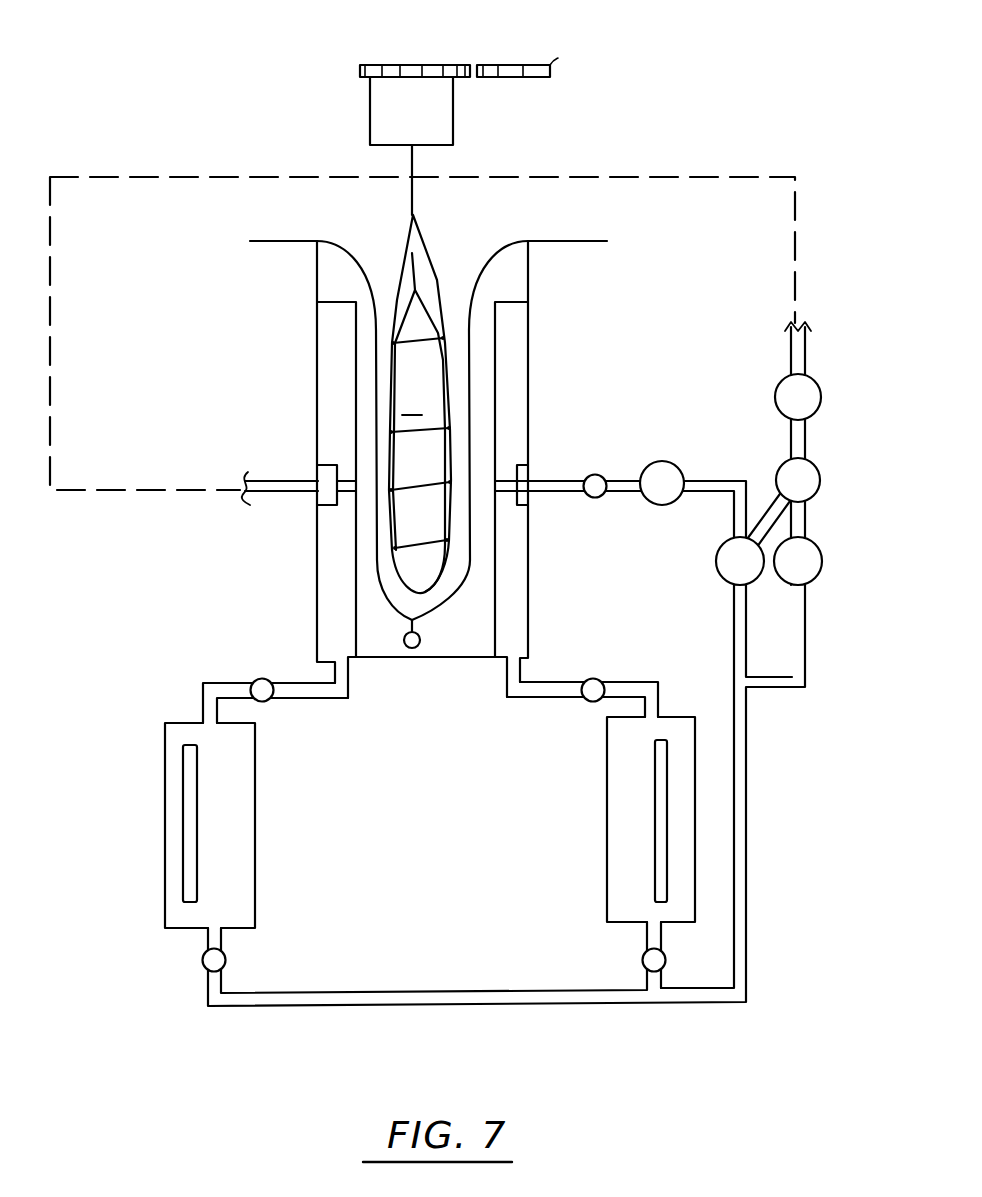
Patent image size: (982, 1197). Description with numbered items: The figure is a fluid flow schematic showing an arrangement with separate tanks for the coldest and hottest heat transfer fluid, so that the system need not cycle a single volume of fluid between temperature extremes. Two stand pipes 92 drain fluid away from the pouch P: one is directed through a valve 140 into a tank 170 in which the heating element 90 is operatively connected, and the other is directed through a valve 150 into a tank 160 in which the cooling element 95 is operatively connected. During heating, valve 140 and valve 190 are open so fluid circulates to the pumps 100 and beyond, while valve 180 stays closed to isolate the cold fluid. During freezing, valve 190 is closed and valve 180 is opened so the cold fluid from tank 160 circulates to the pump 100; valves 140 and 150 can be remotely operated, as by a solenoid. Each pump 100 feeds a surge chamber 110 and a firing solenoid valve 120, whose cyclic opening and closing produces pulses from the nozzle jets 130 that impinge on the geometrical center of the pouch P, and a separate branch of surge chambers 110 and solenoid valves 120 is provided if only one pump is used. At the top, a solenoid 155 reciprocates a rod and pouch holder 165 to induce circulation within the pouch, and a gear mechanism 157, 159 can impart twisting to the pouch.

The gear mechanism 157 is at (372, 66).
The solenoid 155 is at (378, 108).
The gear mechanism 159 is at (513, 80).
The rod and pouch holder 165 is at (390, 482).
The stand pipe 92 is at (541, 312).
The nozzle jet 130 is at (505, 488).
The solenoid valve 120 is at (789, 388).
The surge chamber 110 is at (808, 483).
The pump 100 is at (808, 560).
The valve 150 is at (263, 680).
The valve 140 is at (600, 680).
The tank 160 is at (233, 835).
The cooling element 95 is at (190, 830).
The tank 170 is at (623, 796).
The heating element 90 is at (657, 860).
The valve 180 is at (227, 958).
The valve 190 is at (642, 958).